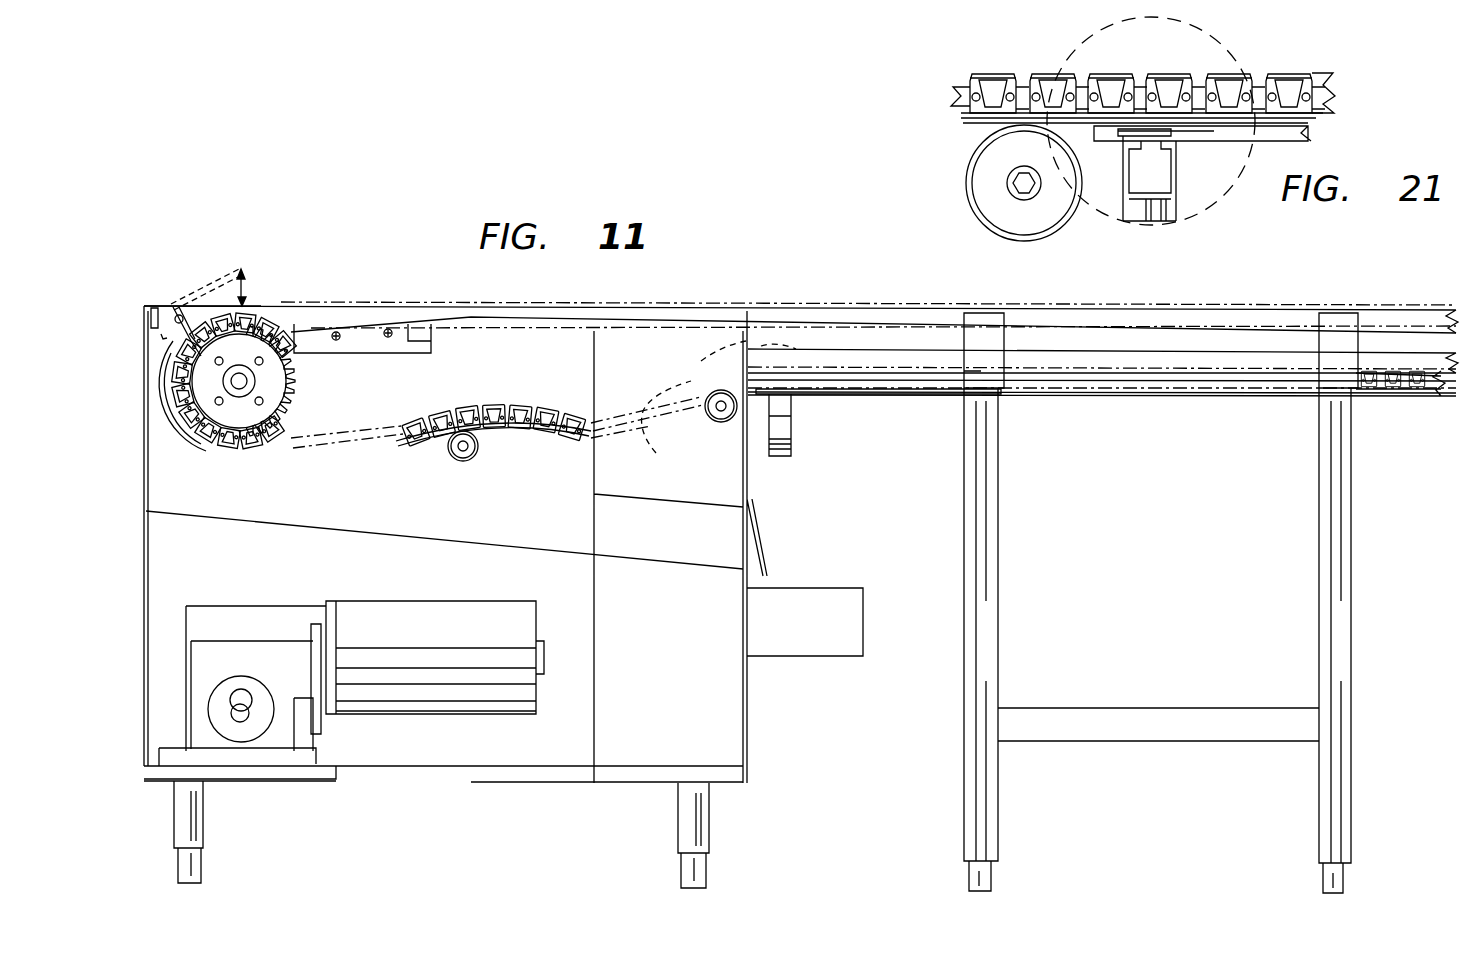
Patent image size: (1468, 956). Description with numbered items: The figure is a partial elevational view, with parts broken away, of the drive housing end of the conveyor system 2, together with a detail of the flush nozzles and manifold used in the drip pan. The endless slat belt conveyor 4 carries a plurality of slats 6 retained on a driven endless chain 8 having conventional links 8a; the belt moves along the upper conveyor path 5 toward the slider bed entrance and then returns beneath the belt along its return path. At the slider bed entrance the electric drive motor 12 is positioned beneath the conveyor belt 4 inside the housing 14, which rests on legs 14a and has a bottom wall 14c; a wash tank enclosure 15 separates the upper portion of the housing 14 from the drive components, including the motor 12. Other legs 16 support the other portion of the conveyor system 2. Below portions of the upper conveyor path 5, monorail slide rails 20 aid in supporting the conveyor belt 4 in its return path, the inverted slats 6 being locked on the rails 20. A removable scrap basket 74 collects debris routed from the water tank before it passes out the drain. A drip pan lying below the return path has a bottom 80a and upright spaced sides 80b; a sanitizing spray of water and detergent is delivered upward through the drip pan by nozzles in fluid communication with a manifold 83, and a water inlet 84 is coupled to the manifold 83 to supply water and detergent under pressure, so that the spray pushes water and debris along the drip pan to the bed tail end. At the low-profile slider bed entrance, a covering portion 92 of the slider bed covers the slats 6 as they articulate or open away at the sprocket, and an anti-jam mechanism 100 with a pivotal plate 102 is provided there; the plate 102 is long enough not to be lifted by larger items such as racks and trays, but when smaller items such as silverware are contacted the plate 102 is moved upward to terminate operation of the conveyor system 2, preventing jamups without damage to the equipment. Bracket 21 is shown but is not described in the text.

In FIG. 11, the conveyor system 2 is at (676, 293).
In FIG. 11, the endless slat belt conveyor 4 is at (377, 307).
In FIG. 11, the upper conveyor path 5 is at (768, 310).
In FIG. 11, the slats 6 is at (273, 310).
In FIG. 21, the slats 6 is at (1143, 107).
In FIG. 11, the driven endless chain 8 is at (466, 410).
In FIG. 11, the links 8a is at (546, 426).
In FIG. 11, the drive motor 12 is at (447, 598).
In FIG. 11, the housing 14 is at (748, 712).
In FIG. 11, the legs 14a is at (204, 808).
In FIG. 11, the bottom wall 14c is at (407, 782).
In FIG. 11, the wash tank enclosure 15 is at (370, 533).
In FIG. 11, the legs 16 is at (997, 552).
In FIG. 11, the monorail slide rails 20 is at (903, 373).
In FIG. 11, the mounting bracket assembly 21 is at (800, 420).
In FIG. 11, the scrap basket 74 is at (831, 585).
In FIG. 11, the bottom 80a is at (1190, 395).
In FIG. 11, the upright spaced sides 80b is at (1080, 388).
In FIG. 11, the manifold 83 is at (776, 398).
In FIG. 21, the manifold 83 is at (1147, 153).
In FIG. 11, the water inlet 84 is at (784, 440).
In FIG. 21, the water inlet 84 is at (1137, 213).
In FIG. 11, the covering portion of the slider bed 92 is at (247, 268).
In FIG. 11, the anti-jam mechanism 100 is at (174, 304).
In FIG. 11, the pivotal plate 102 is at (204, 286).